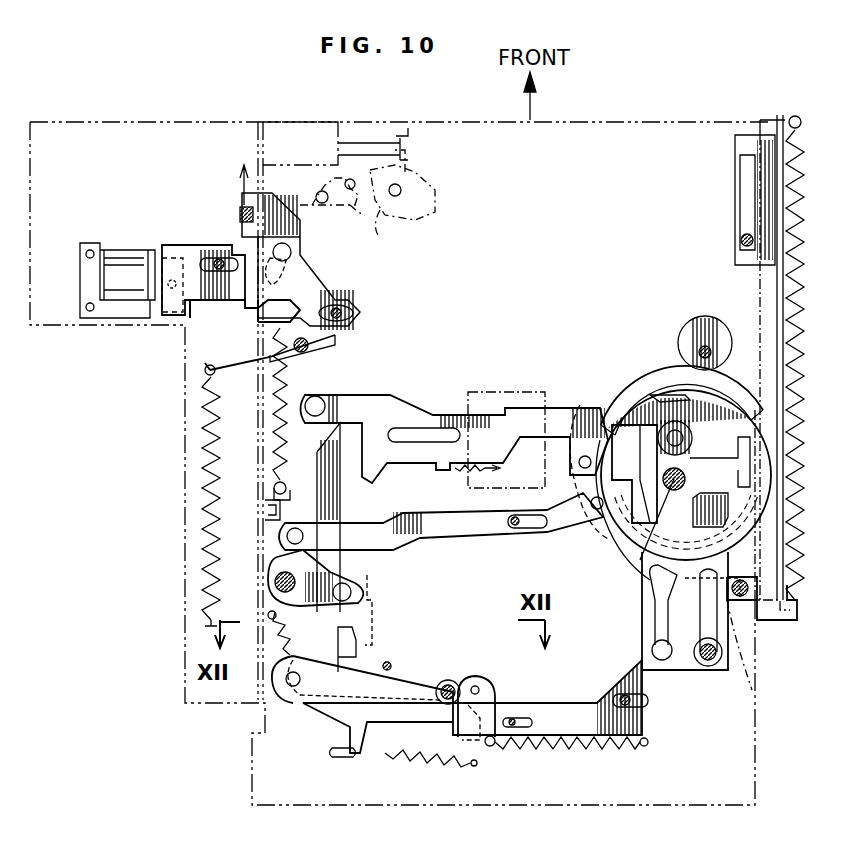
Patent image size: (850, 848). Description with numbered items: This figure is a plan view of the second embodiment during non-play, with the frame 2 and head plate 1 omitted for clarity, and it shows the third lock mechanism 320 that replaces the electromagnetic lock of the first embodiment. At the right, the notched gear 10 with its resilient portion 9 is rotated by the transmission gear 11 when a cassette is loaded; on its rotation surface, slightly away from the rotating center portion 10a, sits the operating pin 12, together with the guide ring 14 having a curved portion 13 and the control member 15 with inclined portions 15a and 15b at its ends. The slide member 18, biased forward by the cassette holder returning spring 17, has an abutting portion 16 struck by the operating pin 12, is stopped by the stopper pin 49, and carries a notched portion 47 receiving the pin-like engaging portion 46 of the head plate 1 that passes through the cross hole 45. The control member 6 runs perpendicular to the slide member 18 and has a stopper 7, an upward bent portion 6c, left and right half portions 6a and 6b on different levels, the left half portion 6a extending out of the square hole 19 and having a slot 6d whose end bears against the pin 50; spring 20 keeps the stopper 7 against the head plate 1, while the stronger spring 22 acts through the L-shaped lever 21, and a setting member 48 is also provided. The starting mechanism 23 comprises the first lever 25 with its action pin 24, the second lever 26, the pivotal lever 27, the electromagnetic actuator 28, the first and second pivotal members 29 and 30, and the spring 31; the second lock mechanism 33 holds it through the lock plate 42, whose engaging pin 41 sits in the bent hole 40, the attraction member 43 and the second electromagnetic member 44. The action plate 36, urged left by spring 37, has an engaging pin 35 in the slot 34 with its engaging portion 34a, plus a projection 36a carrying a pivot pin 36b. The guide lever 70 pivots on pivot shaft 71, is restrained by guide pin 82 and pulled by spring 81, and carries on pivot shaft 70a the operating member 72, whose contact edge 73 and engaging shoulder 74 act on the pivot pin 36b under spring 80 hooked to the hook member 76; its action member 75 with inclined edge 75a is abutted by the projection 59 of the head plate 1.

The frame 2 is at (652, 132).
The electromagnetic actuator 28 is at (262, 150).
The first pivotal member 29 is at (435, 172).
The second pivotal member 30 is at (355, 220).
The second electromagnetic member 44 is at (120, 258).
The attraction member 43 is at (172, 258).
The lock plate 42 is at (204, 246).
The engaging pin 41 is at (291, 252).
The bent hole 40 is at (305, 270).
The second lock mechanism 33 is at (210, 312).
The L-shaped lever 21 is at (230, 358).
The spring 22 is at (203, 408).
The spring 31 is at (275, 440).
The setting member 48 is at (265, 510).
The control member 6 is at (555, 408).
The left half portion 6a is at (385, 410).
The right half portion 6b is at (575, 412).
The upward bent portion 6c is at (522, 412).
The slot 6d is at (470, 410).
The stopper 7 is at (373, 470).
The head plate 1 is at (373, 405).
The pin 50 is at (440, 410).
The square hole 19 is at (498, 392).
The spring 20 is at (448, 470).
The control member 15 is at (580, 462).
The inclined portion 15a is at (592, 503).
The inclined portion 15b is at (588, 400).
The first lever 25 is at (446, 532).
The second lever 26 is at (328, 512).
The action pin 24 is at (595, 520).
The notched gear 10 is at (610, 560).
The guide ring 14 is at (605, 420).
The resilient portion 9 is at (660, 395).
The transmission gear 11 is at (700, 318).
The operating pin 12 is at (690, 432).
The rotating center portion 10a is at (688, 478).
The curved portion 13 is at (612, 455).
The abutting portion 16 is at (718, 460).
The notched portion 47 is at (710, 527).
The slide member 18 is at (640, 620).
The slot 34 is at (655, 642).
The engaging portion 34a is at (648, 580).
The stopper pin 49 is at (712, 670).
The engaging pin 35 is at (665, 665).
The engaging portion 46 is at (742, 622).
The cross hole 45 is at (740, 640).
The cassette holder returning spring 17 is at (800, 518).
The starting mechanism 23 is at (352, 560).
The pivotal lever 27 is at (278, 622).
The spring 81 is at (292, 648).
The guide lever 70 is at (328, 712).
The pivot shaft 70a is at (308, 698).
The hook member 76 is at (345, 758).
The operating member 72 is at (408, 722).
The engaging shoulder 74 is at (445, 722).
The spring 80 is at (418, 765).
The action member 75 is at (362, 655).
The inclined edge 75a is at (360, 632).
The projection 59 is at (373, 628).
The guide pin 82 is at (392, 666).
The pivot shaft 71 is at (450, 682).
The action plate 36 is at (575, 712).
The projection 36a is at (486, 682).
The pivot pin 36b is at (474, 685).
The third lock mechanism 320 is at (508, 702).
The contact edge 73 is at (490, 748).
The spring 37 is at (555, 750).